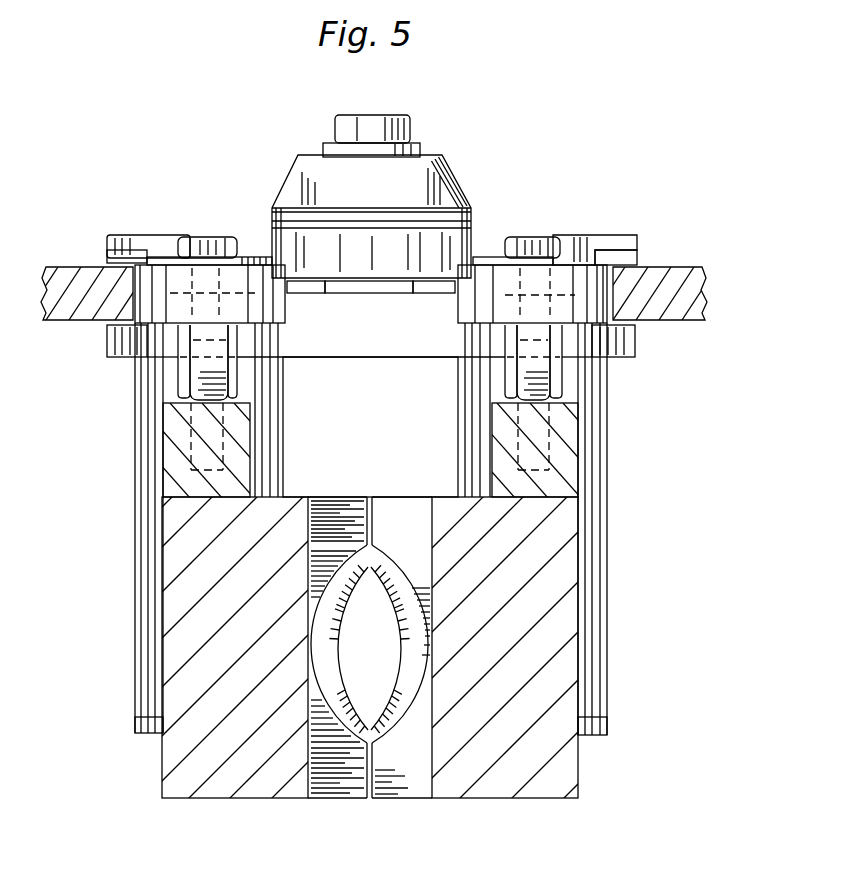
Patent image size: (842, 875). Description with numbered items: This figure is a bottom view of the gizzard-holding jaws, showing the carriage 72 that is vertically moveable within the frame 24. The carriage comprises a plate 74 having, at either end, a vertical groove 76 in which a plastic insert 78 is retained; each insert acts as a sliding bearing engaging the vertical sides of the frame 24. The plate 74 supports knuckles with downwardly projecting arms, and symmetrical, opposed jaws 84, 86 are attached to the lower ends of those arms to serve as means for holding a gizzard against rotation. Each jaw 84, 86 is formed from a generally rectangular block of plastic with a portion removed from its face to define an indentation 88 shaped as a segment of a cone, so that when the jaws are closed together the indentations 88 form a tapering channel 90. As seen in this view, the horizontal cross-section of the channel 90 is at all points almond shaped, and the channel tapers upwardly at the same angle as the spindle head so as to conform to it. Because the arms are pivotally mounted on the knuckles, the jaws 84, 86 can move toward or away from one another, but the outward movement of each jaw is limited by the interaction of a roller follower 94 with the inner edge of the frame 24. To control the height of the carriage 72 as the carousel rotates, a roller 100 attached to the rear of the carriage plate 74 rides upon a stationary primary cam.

The frame 24 is at (70, 322).
The carriage 72 is at (626, 420).
The plate 74 is at (428, 335).
The vertical groove 76 is at (598, 250).
The plastic insert 78 is at (640, 262).
The jaw 84 is at (162, 773).
The jaw 86 is at (578, 778).
The indentation 88 is at (398, 646).
The tapering channel 90 is at (382, 687).
The roller follower 94 is at (244, 262).
The roller 100 is at (450, 182).